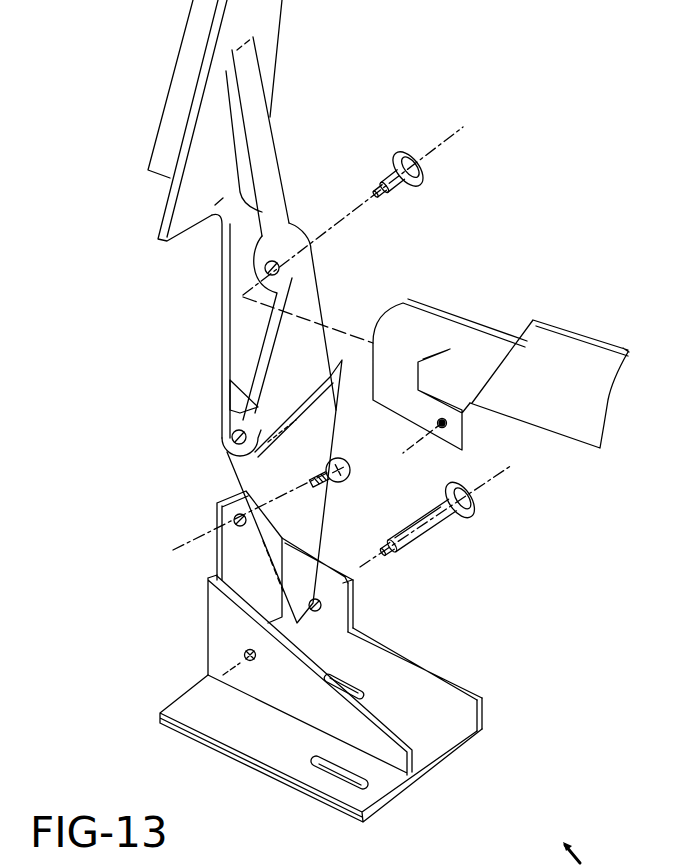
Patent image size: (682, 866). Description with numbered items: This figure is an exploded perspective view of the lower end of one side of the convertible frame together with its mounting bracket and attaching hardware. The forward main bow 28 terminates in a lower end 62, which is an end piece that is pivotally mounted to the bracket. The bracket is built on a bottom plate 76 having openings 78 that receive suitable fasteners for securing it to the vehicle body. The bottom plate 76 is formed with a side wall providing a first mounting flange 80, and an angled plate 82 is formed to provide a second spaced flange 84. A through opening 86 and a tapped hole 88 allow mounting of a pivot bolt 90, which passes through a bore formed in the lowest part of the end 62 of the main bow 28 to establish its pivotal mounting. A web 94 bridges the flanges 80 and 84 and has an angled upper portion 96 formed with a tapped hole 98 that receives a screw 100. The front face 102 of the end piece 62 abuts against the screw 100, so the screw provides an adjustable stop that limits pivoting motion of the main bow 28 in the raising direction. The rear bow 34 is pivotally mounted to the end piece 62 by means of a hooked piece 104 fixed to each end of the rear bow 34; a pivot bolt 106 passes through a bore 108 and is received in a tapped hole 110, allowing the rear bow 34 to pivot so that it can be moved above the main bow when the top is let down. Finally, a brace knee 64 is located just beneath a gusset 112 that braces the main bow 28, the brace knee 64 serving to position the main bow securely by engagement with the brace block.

The forward main bow 28 is at (278, 36).
The rear bow 34 is at (553, 336).
The lower end of main bow 62 is at (258, 410).
The brace knee 64 is at (291, 227).
The bottom plate 76 is at (437, 742).
The openings 78 is at (363, 698).
The first mounting flange 80 is at (351, 606).
The angled plate 82 is at (308, 702).
The second spaced flange 84 is at (215, 603).
The through opening 86 is at (319, 598).
The tapped hole 88 is at (243, 655).
The pivot bolt 90 is at (432, 539).
The web 94 is at (274, 544).
The angled upper portion 96 is at (215, 508).
The tapped hole 98 is at (245, 512).
The screw 100 is at (345, 458).
The front face 102 is at (221, 347).
The hooked piece 104 is at (458, 355).
The pivot bolt 106 is at (427, 173).
The bore 108 is at (280, 264).
The tapped hole 110 is at (447, 426).
The gusset 112 is at (272, 158).